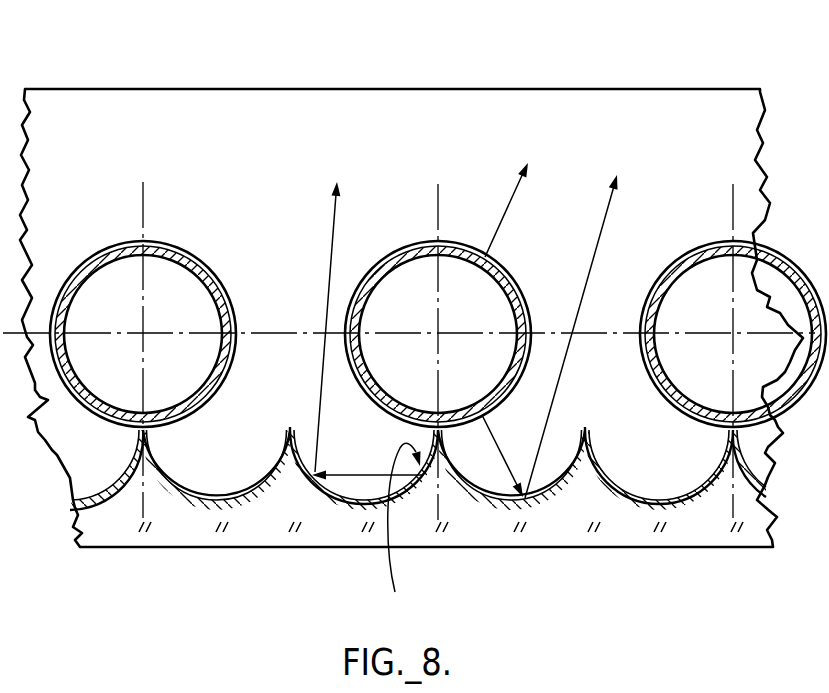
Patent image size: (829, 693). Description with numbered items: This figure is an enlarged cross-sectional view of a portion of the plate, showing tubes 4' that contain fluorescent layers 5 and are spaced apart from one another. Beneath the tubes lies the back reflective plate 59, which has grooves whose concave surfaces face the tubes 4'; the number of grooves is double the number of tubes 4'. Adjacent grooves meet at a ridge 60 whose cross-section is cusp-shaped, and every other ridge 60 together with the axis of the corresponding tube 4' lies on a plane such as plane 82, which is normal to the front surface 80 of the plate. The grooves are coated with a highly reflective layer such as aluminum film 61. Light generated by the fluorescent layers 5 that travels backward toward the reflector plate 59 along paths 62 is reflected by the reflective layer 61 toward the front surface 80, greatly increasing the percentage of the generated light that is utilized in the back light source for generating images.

The front surface 80 is at (518, 89).
The plane 82 is at (145, 191).
The fluorescent layer 5 is at (122, 243).
The tube 4' is at (438, 325).
The ridge 60 is at (152, 465).
The aluminum film 61 is at (350, 510).
The back reflective plate 59 is at (533, 535).
The paths 62 is at (505, 457).